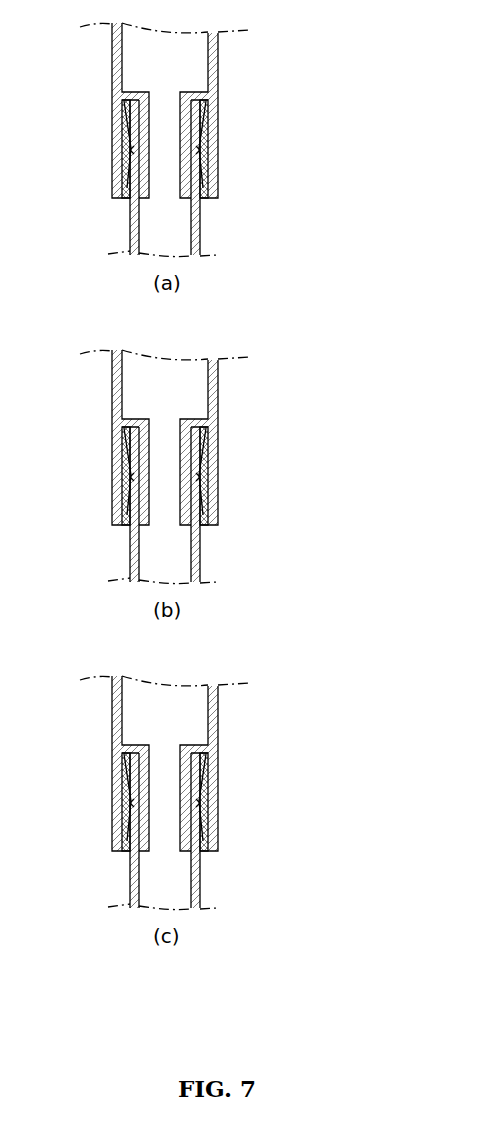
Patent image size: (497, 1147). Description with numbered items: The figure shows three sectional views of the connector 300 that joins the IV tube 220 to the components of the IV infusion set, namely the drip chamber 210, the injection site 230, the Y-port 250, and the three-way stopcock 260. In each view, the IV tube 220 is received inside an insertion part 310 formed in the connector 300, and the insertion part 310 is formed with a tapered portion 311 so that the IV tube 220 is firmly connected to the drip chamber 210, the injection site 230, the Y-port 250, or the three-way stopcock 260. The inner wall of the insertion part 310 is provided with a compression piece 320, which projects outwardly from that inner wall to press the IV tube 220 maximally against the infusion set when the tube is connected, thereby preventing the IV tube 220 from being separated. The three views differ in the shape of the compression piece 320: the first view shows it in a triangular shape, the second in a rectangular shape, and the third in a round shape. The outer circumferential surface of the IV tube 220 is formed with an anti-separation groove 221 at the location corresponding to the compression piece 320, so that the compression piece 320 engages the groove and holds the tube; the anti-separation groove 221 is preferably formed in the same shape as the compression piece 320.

The drip chamber 210 is at (261, 437).
The injection site 230 is at (261, 437).
The Y-port 250 is at (261, 437).
The three-way stopcock 260 is at (218, 62).
The IV tube 220 is at (200, 233).
The anti-separation groove 221 is at (130, 150).
The connector 300 is at (171, 473).
The insertion part 310 is at (125, 108).
The tapered portion 311 is at (209, 110).
The compression piece 320 is at (200, 150).